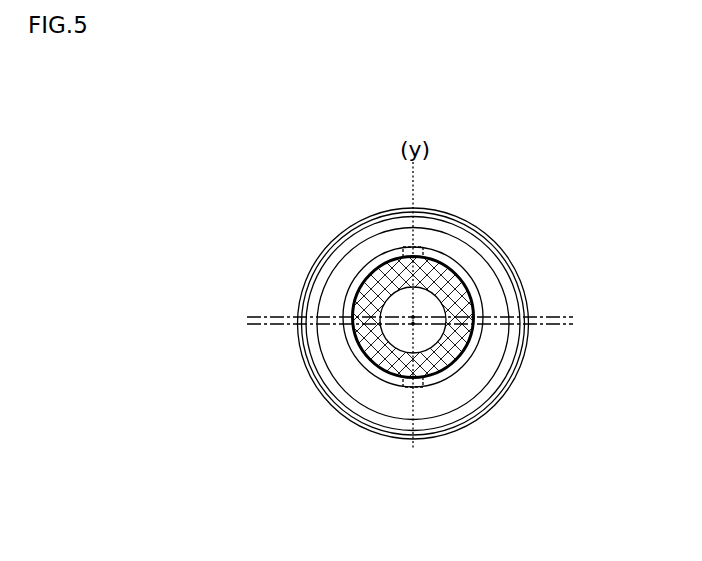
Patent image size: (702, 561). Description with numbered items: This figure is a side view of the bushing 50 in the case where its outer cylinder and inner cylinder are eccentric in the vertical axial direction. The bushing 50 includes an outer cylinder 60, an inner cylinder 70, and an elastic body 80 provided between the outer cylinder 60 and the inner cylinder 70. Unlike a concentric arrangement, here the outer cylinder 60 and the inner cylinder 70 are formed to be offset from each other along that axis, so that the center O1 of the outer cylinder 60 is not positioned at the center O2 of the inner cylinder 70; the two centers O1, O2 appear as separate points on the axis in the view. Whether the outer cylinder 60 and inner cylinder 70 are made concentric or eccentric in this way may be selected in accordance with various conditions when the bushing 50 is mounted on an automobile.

The bushing 50 is at (218, 175).
The outer cylinder 60 is at (303, 343).
The elastic body 80 is at (347, 373).
The inner cylinder 70 is at (385, 373).
The center of the outer cylinder O1 is at (415, 324).
The center of the inner cylinder O2 is at (415, 316).